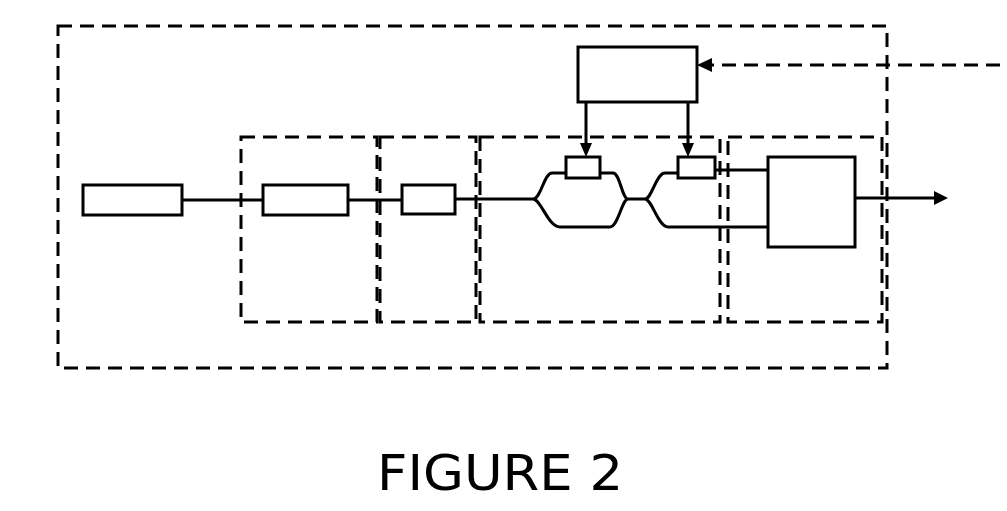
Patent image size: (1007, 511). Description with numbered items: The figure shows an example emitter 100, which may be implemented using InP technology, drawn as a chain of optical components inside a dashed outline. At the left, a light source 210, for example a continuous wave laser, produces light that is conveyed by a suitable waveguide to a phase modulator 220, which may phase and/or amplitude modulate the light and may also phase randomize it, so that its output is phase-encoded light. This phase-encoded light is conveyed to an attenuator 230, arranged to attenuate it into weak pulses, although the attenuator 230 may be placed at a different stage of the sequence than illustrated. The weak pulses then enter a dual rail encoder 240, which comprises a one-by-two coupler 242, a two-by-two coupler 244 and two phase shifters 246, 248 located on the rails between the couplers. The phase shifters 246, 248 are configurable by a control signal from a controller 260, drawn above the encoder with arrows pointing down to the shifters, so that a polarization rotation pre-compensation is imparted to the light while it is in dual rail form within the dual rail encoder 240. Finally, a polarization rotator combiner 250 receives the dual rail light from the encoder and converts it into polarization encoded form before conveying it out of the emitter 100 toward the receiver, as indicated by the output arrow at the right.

The emitter 100 is at (472, 197).
The light source 210 is at (138, 205).
The phase modulator 220 is at (305, 199).
The attenuator 230 is at (420, 198).
The dual rail encoder 240 is at (600, 229).
The 1×2 coupler 242 is at (523, 198).
The 2×2 coupler 244 is at (633, 200).
The phase shifter 246 is at (577, 165).
The phase shifter 248 is at (698, 163).
The polarization rotator combiner 250 is at (802, 202).
The controller 260 is at (637, 102).